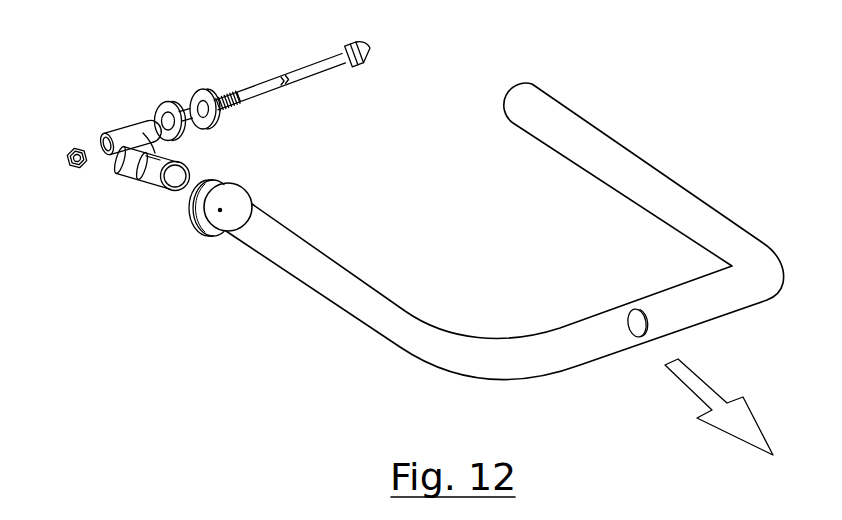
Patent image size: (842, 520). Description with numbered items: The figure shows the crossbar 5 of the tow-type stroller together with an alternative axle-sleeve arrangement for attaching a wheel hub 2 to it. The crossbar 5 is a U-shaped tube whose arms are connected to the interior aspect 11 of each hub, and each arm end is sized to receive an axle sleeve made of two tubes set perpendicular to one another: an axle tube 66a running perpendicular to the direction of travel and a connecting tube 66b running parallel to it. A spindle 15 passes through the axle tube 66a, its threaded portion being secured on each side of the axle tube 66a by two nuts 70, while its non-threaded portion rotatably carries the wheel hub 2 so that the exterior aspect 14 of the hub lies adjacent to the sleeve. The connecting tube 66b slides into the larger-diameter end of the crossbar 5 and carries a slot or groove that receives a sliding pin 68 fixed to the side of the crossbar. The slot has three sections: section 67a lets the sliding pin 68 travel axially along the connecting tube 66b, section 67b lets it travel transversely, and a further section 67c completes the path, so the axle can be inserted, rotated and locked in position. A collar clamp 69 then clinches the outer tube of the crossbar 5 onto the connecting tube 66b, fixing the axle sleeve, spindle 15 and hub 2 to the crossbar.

The wheel hub 2 is at (173, 91).
The crossbar 5 is at (597, 126).
The interior aspect of hub 11 is at (216, 122).
The exterior aspect of hub 14 is at (157, 118).
The spindle 15 is at (336, 60).
The axle tube 66a is at (126, 127).
The connecting tube 66b is at (182, 169).
The slot section 67a is at (146, 167).
The slot section 67b is at (134, 152).
The bracket connector collar 67c is at (146, 154).
The sliding pin 68 is at (224, 216).
The collar clamp 69 is at (240, 186).
The nut 70 is at (66, 160).